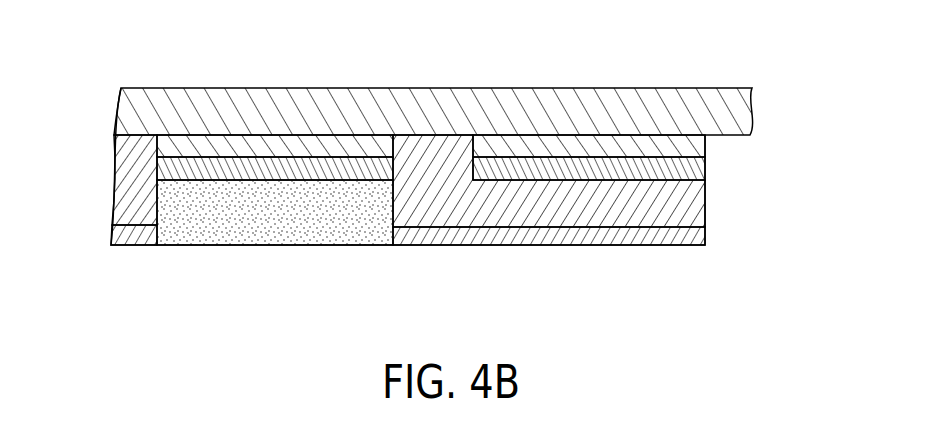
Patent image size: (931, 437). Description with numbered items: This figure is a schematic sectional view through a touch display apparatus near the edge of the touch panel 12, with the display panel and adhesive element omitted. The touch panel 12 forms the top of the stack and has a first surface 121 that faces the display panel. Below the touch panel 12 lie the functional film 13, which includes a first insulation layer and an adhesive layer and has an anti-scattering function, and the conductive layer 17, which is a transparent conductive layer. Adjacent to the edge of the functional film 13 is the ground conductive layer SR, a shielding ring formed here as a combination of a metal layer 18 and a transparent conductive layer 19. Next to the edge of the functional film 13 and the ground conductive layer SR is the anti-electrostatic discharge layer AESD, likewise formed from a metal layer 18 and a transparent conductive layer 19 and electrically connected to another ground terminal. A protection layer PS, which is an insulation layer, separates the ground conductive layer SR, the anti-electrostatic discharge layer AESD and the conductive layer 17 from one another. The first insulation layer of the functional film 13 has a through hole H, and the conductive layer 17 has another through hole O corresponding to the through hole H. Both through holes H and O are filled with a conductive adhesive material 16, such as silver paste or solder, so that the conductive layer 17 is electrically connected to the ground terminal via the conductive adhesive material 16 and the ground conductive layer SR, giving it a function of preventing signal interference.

The touch panel 12 is at (189, 114).
The first surface 121 is at (641, 135).
The functional film 13 is at (114, 156).
The conductive adhesive material 16 is at (215, 229).
The conductive layer 17 is at (113, 240).
The metal layer 18 is at (295, 150).
The transparent conductive layer 19 is at (338, 166).
The through hole H is at (347, 210).
The through hole O is at (275, 250).
The protection layer PS is at (694, 207).
The ground conductive layer SR is at (347, 54).
The anti-electrostatic discharge layer AESD is at (770, 145).